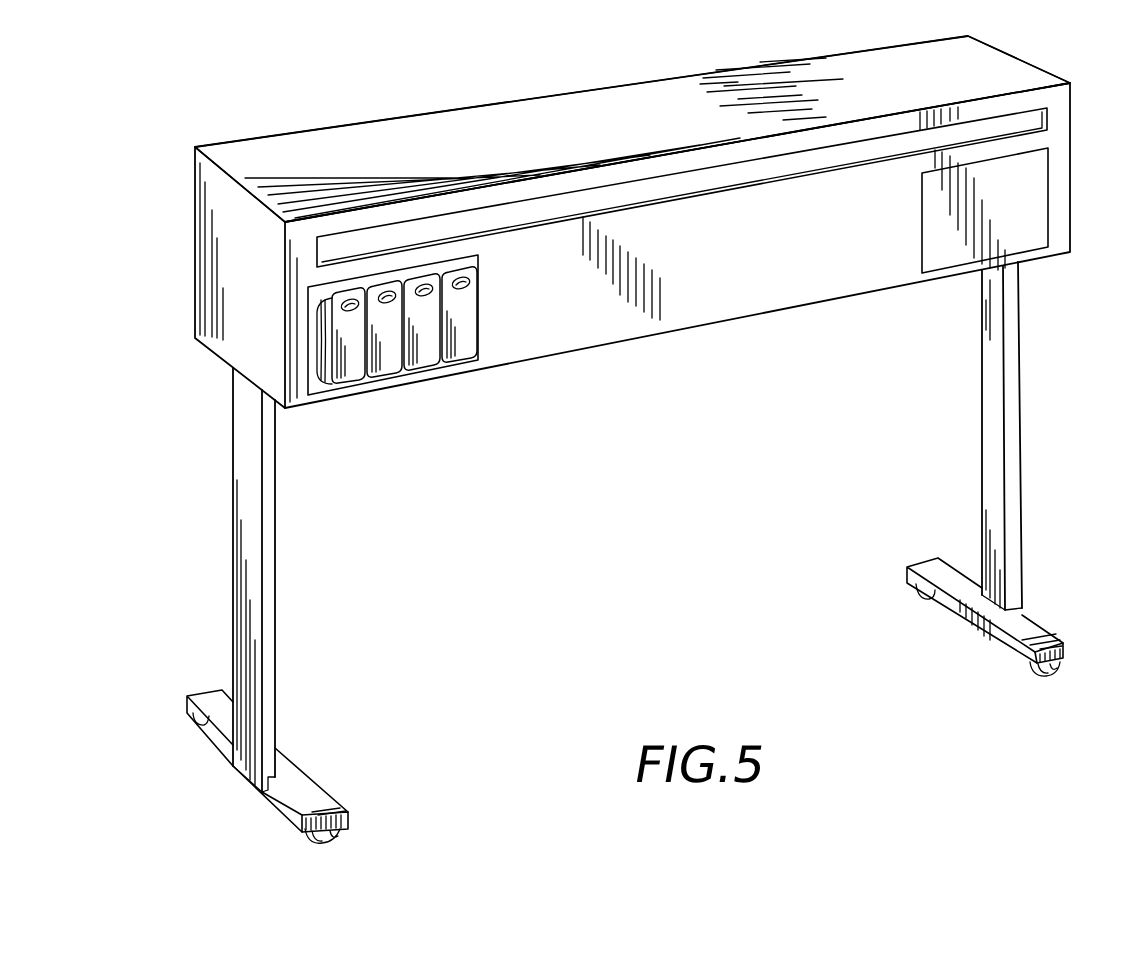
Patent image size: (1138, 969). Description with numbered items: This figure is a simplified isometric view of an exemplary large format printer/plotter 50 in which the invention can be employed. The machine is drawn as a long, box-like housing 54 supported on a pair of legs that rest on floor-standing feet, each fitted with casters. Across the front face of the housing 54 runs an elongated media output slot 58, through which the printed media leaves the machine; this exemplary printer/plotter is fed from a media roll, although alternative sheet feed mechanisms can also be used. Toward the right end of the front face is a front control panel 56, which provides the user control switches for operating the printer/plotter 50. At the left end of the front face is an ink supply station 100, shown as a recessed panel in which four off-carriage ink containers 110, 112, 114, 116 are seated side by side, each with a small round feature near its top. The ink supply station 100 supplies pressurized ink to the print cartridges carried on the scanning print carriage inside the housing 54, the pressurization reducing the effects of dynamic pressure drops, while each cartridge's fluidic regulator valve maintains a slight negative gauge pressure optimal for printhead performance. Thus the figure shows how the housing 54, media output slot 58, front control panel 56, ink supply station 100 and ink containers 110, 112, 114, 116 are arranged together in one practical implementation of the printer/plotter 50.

The printer/plotter 50 is at (620, 86).
The housing 54 is at (368, 143).
The front control panel 56 is at (1022, 237).
The media output slot 58 is at (868, 130).
The ink supply station 100 is at (480, 357).
The off-carriage ink container 110 is at (345, 372).
The off-carriage ink container 112 is at (382, 368).
The off-carriage ink container 114 is at (421, 363).
The off-carriage ink container 116 is at (463, 356).